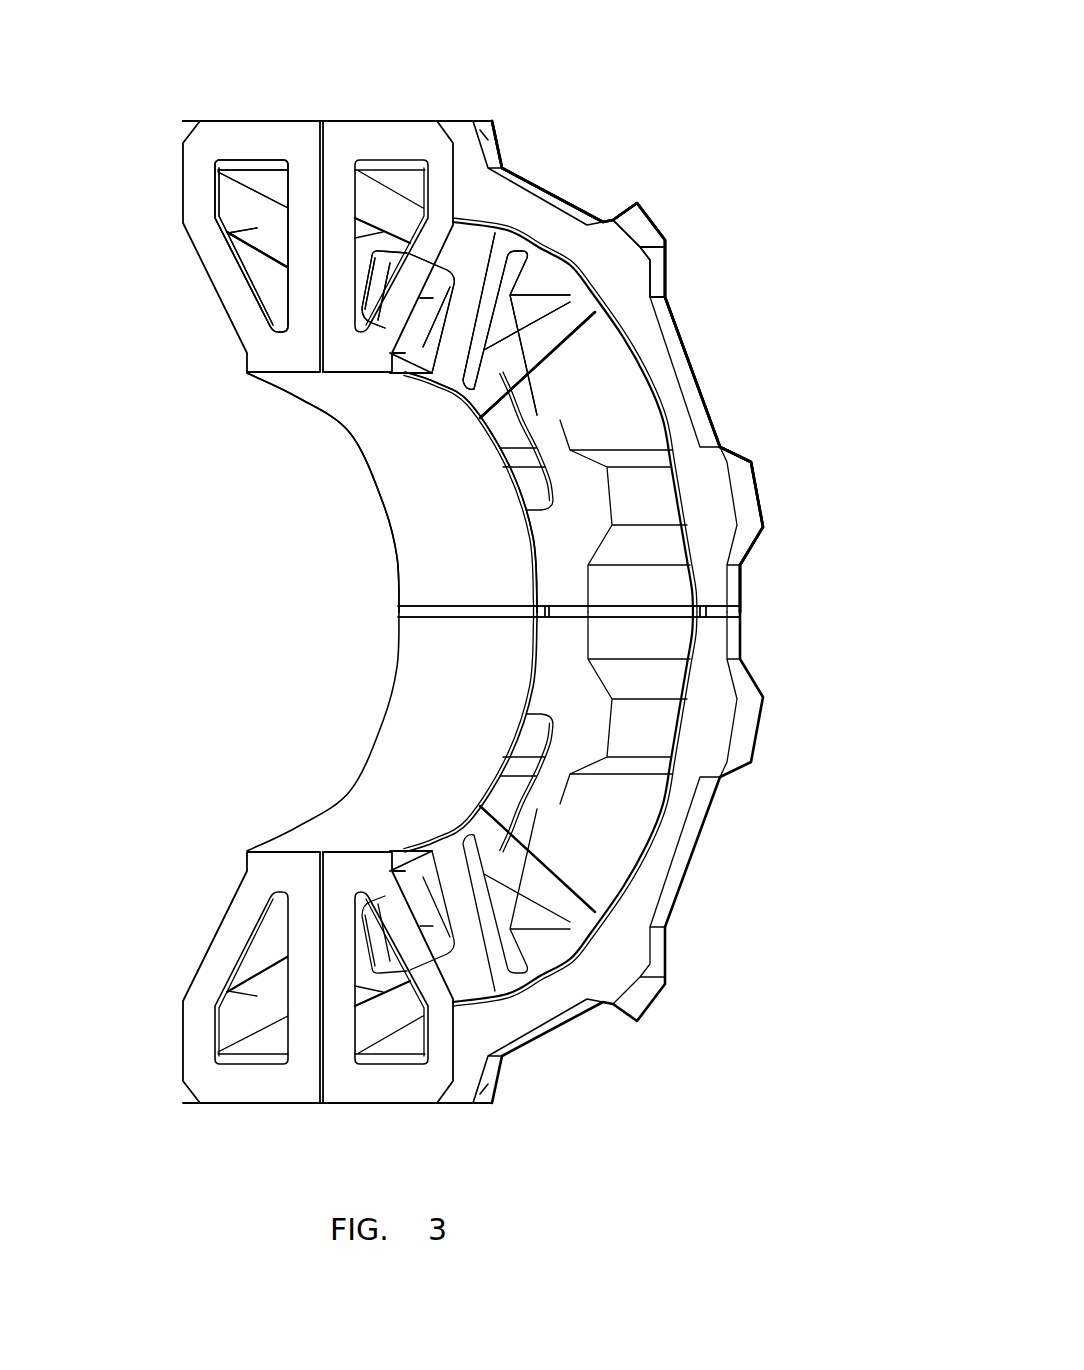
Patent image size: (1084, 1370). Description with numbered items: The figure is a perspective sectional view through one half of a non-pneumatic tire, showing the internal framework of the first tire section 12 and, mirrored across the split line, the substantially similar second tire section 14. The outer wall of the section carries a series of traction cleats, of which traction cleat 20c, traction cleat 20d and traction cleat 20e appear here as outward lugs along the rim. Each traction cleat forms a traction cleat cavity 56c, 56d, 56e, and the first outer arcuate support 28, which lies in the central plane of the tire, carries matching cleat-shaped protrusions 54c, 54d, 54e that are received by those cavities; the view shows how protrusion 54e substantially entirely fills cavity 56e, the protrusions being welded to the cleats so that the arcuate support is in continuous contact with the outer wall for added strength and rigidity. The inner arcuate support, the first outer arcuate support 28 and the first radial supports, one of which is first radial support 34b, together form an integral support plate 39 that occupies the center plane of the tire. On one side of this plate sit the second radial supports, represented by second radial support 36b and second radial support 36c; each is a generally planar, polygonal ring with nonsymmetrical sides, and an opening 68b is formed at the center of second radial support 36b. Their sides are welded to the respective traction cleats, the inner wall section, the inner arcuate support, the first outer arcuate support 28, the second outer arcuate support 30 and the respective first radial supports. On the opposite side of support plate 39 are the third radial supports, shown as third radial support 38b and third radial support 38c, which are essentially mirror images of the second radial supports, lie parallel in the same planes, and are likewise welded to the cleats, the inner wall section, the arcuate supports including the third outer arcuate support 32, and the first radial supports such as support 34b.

The first tire section 12 is at (713, 320).
The second tire section 14 is at (743, 853).
The traction cleat 20c is at (470, 128).
The traction cleat 20d is at (643, 228).
The traction cleat 20e is at (755, 490).
The first outer arcuate support 28 is at (557, 425).
The second outer arcuate support 30 is at (707, 567).
The third outer arcuate support 32 is at (243, 235).
The first radial support 34b is at (318, 270).
The second radial support 36b is at (400, 140).
The second radial support 36c is at (572, 315).
The third radial support 38b is at (246, 140).
The third radial support 38c is at (357, 280).
The support plate 39 is at (550, 548).
The cleat-shaped protrusion 54c is at (510, 148).
The cleat-shaped protrusion 54d is at (665, 270).
The cleat-shaped protrusion 54e is at (710, 468).
The traction cleat cavity 56c is at (487, 148).
The traction cleat cavity 56d is at (637, 207).
The traction cleat cavity 56e is at (663, 497).
The opening 68b is at (372, 195).